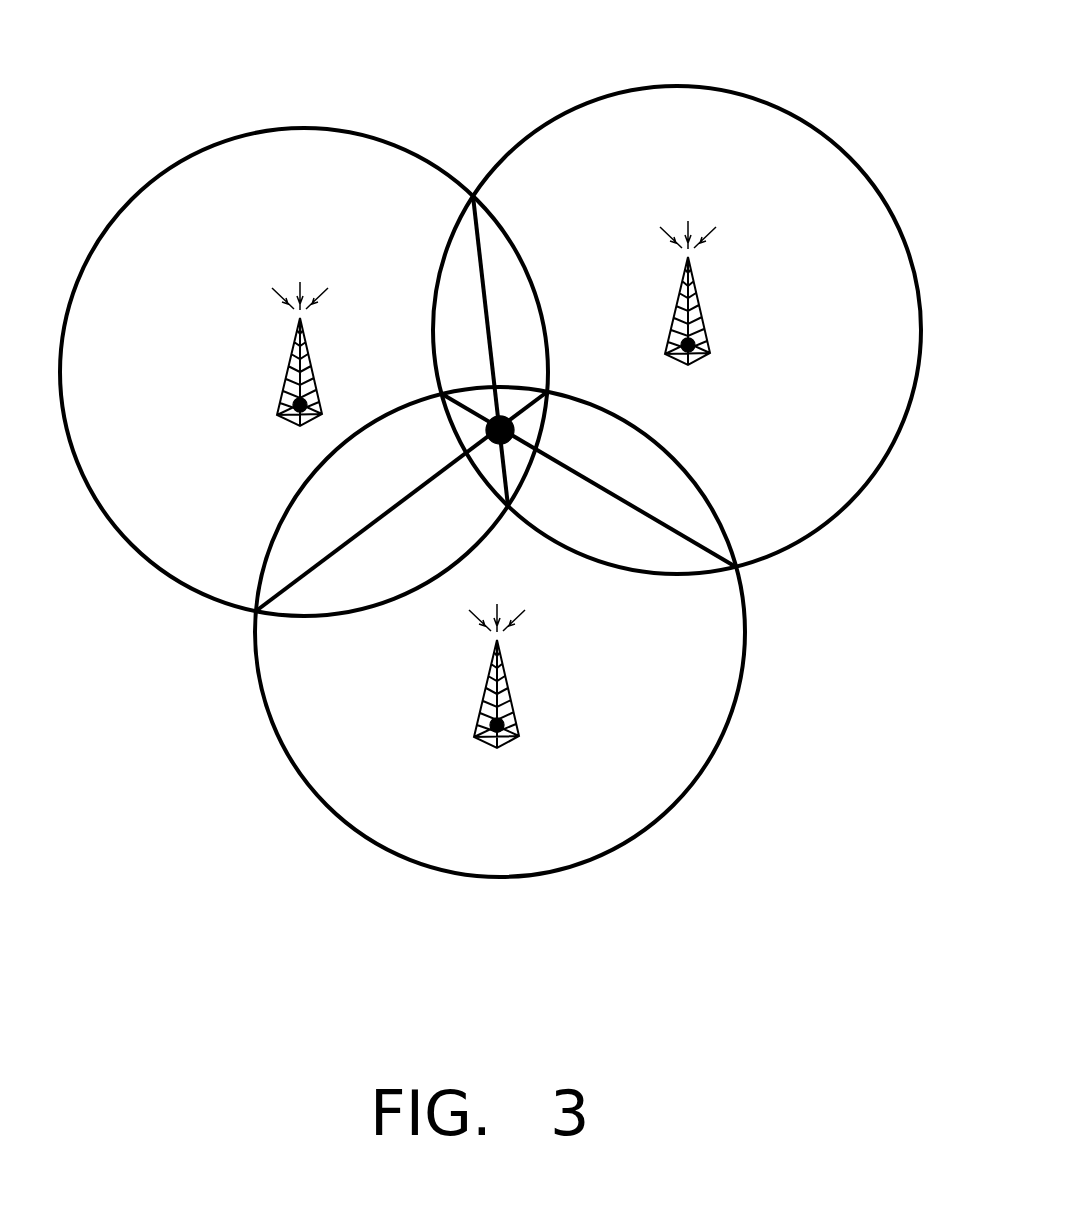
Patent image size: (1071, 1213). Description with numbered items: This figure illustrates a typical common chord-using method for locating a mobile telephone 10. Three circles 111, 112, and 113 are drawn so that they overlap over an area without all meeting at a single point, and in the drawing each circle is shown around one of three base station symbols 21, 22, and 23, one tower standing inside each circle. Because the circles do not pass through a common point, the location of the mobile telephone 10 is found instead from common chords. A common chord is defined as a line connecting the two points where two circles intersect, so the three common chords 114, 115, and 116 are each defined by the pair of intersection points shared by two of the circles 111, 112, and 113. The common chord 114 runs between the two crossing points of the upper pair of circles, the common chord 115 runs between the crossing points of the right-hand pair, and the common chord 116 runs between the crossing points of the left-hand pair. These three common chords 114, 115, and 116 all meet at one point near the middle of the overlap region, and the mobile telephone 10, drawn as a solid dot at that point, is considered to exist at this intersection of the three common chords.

The mobile telephone 10 is at (512, 420).
The first base station 21 is at (322, 403).
The second base station 22 is at (708, 340).
The third base station 23 is at (514, 702).
The circle 111 is at (250, 128).
The circle 112 is at (730, 88).
The circle 113 is at (598, 862).
The common chord 114 is at (485, 292).
The common chord 115 is at (680, 528).
The common chord 116 is at (312, 568).